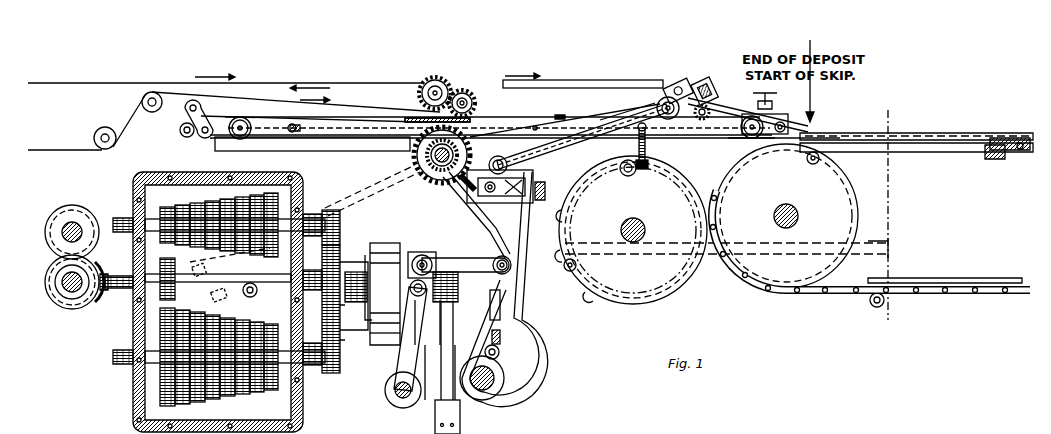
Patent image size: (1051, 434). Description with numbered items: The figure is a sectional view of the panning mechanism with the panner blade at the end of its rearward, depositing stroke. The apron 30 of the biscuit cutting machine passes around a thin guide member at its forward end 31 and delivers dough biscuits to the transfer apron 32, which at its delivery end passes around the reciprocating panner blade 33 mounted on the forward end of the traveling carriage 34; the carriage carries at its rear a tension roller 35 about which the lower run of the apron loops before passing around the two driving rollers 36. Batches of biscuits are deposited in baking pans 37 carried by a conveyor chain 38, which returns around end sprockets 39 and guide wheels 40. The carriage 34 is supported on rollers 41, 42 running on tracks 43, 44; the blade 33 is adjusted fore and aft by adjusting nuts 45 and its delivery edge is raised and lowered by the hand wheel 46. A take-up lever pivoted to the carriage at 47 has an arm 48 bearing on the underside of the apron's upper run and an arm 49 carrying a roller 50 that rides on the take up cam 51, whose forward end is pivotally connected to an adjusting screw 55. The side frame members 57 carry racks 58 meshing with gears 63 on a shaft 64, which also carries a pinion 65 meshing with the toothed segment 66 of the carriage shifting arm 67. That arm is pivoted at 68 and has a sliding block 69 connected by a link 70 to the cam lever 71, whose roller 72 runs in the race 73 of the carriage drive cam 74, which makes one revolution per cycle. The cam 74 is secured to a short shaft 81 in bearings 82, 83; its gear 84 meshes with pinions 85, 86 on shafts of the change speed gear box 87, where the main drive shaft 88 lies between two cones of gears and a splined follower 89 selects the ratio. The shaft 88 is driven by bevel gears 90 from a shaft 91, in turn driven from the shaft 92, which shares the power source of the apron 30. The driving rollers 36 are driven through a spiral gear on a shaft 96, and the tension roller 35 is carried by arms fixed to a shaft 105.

The apron 30 is at (110, 83).
The forward end 31 is at (428, 79).
The transfer apron 32 is at (346, 109).
The panner blade 33 is at (708, 94).
The traveling carriage 34 is at (505, 130).
The tension roller 35 is at (188, 106).
The driving rollers 36 is at (440, 91).
The baking pans 37 is at (998, 150).
The conveyor chain 38 is at (836, 294).
The end sprockets 39 is at (845, 208).
The guide wheels 40 is at (668, 288).
The rollers 41 is at (730, 141).
The rollers 42 is at (252, 118).
The tracks 43 is at (730, 152).
The tracks 44 is at (216, 148).
The adjusting nuts 45 is at (706, 86).
The hand wheel 46 is at (772, 98).
The pivot 47 is at (666, 96).
The arm 48 is at (596, 80).
The arm 49 is at (612, 118).
The roller 50 is at (506, 160).
The take up cam 51 is at (552, 158).
The adjusting screw 55 is at (649, 150).
The frame members 57 is at (578, 120).
The racks 58 is at (418, 118).
The gears 63 is at (438, 168).
The shaft 64 is at (441, 165).
The pinion 65 is at (414, 175).
The toothed segment 66 is at (479, 163).
The carriage shifting arm 67 is at (522, 286).
The pivot 68 is at (500, 383).
The sliding block 69 is at (512, 263).
The link 70 is at (468, 258).
The cam lever 71 is at (394, 381).
The roller 72 is at (420, 255).
The race 73 is at (384, 248).
The carriage drive cam 74 is at (370, 255).
The short shaft 81 is at (366, 262).
The bearings 82 is at (360, 262).
The bearings 83 is at (456, 300).
The gear 84 is at (341, 348).
The pinion 85 is at (340, 370).
The pinion 86 is at (341, 213).
The change speed gear box 87 is at (134, 327).
The main drive shaft 88 is at (246, 292).
The follower 89 is at (132, 296).
The bevel gears 90 is at (70, 310).
The shaft 91 is at (62, 285).
The shaft 92 is at (490, 80).
The shaft 96 is at (356, 194).
The shaft 105 is at (186, 137).